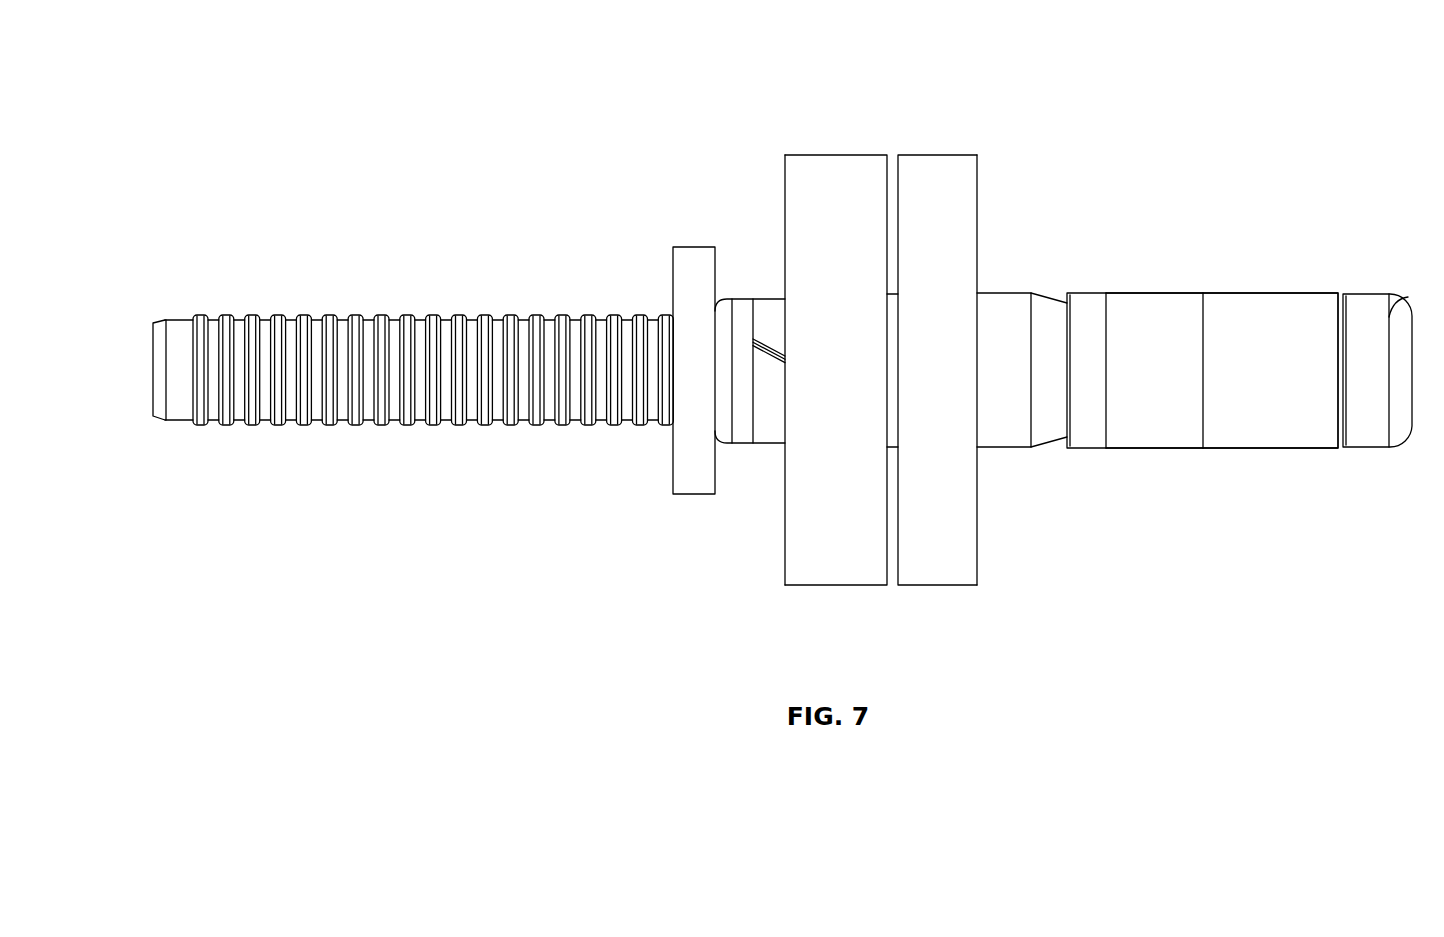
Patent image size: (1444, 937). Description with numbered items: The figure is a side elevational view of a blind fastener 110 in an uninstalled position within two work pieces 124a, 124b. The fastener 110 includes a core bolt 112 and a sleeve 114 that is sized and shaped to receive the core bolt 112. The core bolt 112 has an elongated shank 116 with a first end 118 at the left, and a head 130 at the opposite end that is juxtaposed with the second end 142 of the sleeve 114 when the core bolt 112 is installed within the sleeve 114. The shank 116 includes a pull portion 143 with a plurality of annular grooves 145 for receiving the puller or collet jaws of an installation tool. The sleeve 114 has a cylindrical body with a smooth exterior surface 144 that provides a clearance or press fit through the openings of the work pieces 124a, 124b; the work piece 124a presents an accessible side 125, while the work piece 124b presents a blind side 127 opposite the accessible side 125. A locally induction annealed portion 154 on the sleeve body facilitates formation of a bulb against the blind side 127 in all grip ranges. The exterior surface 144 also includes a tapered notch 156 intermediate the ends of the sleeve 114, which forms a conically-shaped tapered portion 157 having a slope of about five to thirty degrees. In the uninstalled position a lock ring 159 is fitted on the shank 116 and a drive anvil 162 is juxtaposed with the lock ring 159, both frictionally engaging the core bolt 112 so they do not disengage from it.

The blind fastener 110 is at (497, 108).
The core bolt 112 is at (634, 318).
The sleeve 114 is at (1000, 293).
The elongated shank 116 is at (542, 428).
The first end 118 is at (152, 355).
The work piece 124a is at (838, 572).
The work piece 124b is at (935, 572).
The accessible side 125 is at (785, 532).
The blind side 127 is at (978, 555).
The head 130 is at (1407, 298).
The second end 142 is at (1323, 448).
The pull portion 143 is at (409, 318).
The exterior surface 144 is at (1278, 292).
The annular grooves 145 is at (446, 426).
The annealed portion 154 is at (1160, 308).
The tapered notch 156 is at (1048, 293).
The tapered portion 157 is at (1047, 430).
The lock ring 159 is at (775, 317).
The drive anvil 162 is at (695, 256).